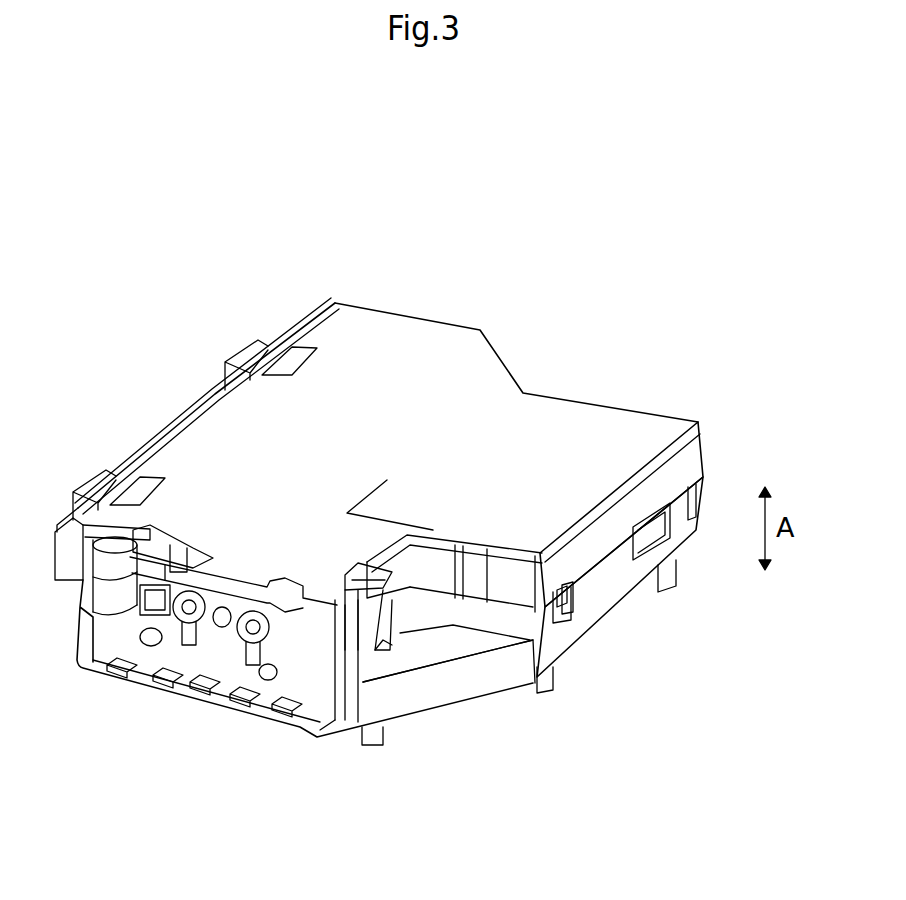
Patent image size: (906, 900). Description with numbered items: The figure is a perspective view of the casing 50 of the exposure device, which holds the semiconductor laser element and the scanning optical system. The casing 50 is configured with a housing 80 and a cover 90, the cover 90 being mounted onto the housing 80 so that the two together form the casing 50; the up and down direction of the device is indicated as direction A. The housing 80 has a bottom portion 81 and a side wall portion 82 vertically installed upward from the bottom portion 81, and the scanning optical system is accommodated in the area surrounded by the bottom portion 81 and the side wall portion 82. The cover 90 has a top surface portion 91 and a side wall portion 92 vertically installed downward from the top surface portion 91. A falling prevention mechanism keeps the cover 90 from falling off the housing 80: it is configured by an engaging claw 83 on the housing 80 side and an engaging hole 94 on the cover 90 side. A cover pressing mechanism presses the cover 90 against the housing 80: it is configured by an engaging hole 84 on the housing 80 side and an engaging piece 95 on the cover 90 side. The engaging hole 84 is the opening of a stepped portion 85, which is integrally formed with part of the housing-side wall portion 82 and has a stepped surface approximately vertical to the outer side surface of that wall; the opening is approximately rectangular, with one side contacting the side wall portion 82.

The casing 50 is at (451, 305).
The housing 80 is at (682, 542).
The bottom portion 81 is at (415, 720).
The side wall portion 82 is at (624, 580).
The engaging claw 83 is at (572, 602).
The engaging hole 84 is at (400, 632).
The stepped portion 85 is at (473, 643).
The cover 90 is at (670, 428).
The top surface portion 91 is at (568, 423).
The side wall portion 92 is at (690, 466).
The engaging hole 94 is at (569, 588).
The engaging piece 95 is at (412, 609).